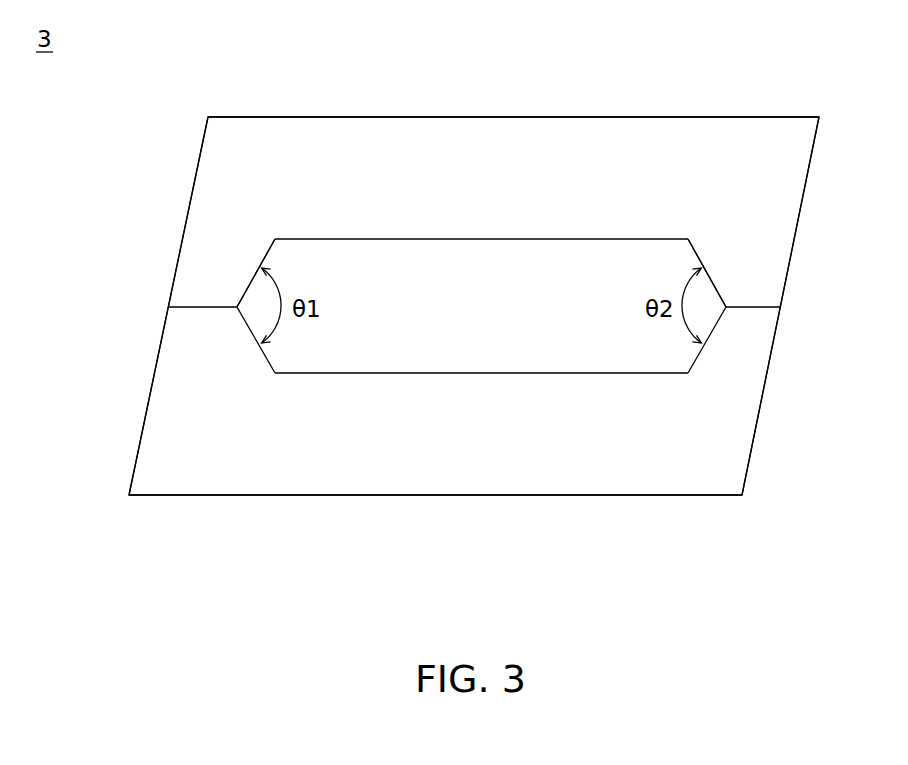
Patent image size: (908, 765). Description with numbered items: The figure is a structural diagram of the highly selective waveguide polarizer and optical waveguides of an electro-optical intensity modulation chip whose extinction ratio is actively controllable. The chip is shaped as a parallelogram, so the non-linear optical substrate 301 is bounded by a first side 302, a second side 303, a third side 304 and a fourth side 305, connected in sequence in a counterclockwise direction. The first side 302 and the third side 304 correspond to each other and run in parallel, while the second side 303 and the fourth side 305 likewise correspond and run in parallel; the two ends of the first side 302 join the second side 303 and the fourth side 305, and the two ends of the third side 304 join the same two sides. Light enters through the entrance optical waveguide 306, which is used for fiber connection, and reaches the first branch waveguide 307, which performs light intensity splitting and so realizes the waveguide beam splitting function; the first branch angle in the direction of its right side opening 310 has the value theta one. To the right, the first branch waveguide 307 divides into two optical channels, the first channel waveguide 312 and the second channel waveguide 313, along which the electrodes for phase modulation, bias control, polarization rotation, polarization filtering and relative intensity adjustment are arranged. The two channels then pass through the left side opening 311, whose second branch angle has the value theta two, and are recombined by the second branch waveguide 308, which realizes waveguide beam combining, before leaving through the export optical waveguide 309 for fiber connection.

The non-linear optical substrate 301 is at (153, 453).
The first side 302 is at (187, 217).
The second side 303 is at (505, 497).
The third side 304 is at (753, 443).
The fourth side 305 is at (411, 117).
The entrance optical waveguide 306 is at (205, 307).
The first branch waveguide 307 is at (237, 307).
The second branch waveguide 308 is at (726, 307).
The export optical waveguide 309 is at (753, 307).
The right side opening 310 is at (283, 262).
The left side opening 311 is at (675, 268).
The first channel waveguide 312 is at (547, 239).
The second channel waveguide 313 is at (418, 373).